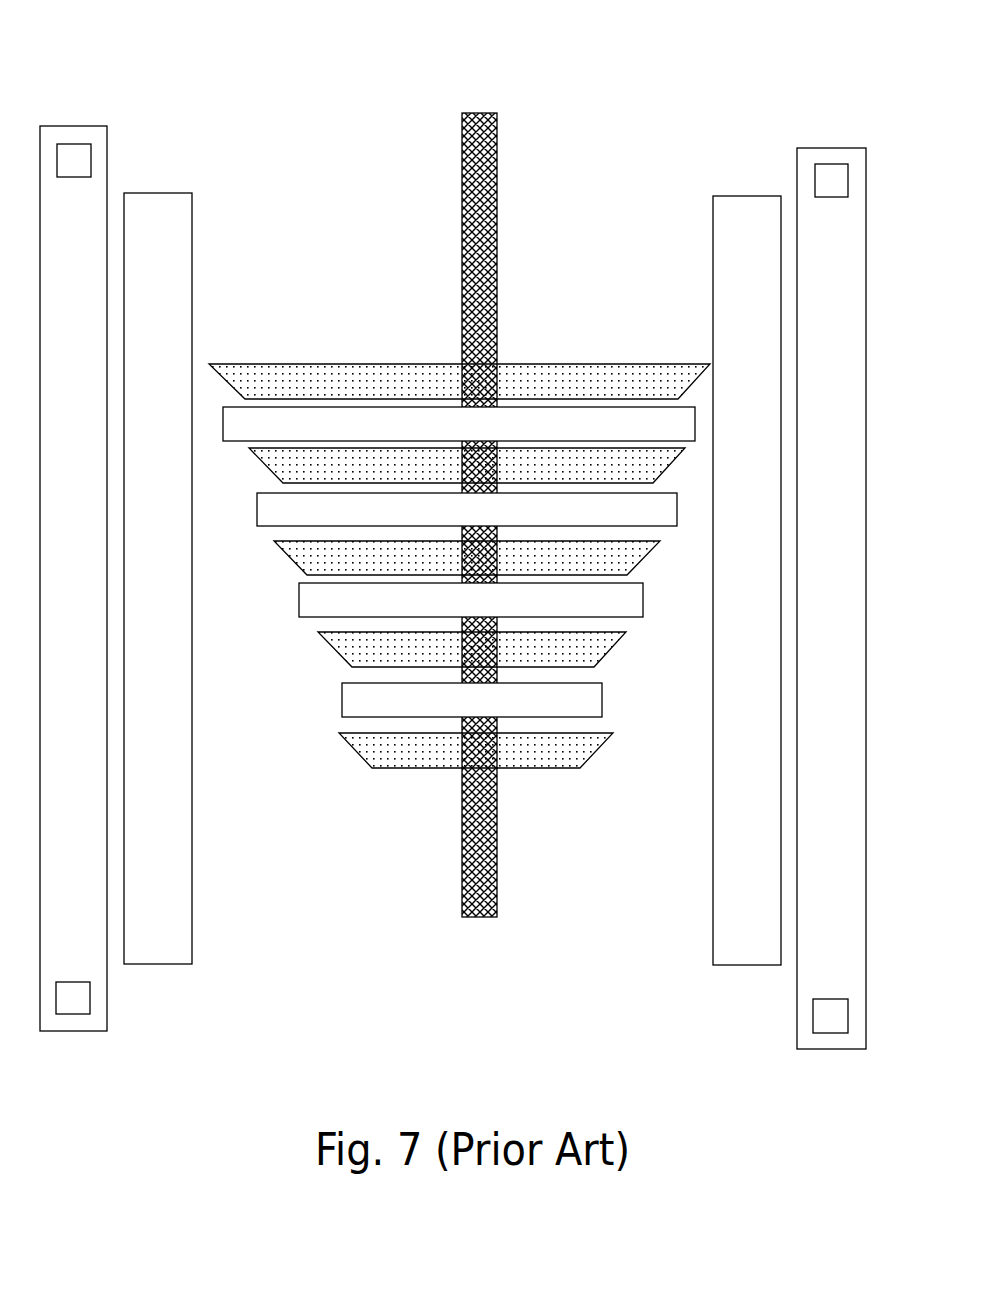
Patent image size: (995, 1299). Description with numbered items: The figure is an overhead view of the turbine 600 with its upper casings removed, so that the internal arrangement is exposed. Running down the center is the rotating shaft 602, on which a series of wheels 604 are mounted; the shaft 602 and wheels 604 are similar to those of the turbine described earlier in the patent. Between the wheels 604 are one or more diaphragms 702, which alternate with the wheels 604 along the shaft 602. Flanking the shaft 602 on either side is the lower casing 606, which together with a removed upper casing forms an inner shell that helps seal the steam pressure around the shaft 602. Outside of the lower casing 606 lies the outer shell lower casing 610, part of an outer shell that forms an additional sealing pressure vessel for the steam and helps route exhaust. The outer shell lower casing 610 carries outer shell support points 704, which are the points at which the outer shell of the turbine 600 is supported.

The turbine 600 is at (176, 20).
The shaft 602 is at (460, 206).
The wheels 604 is at (287, 562).
The lower casing 606 is at (156, 967).
The outer shell lower casing 610 is at (39, 1035).
The diaphragms 702 is at (678, 529).
The outer shell support points 704 is at (73, 142).